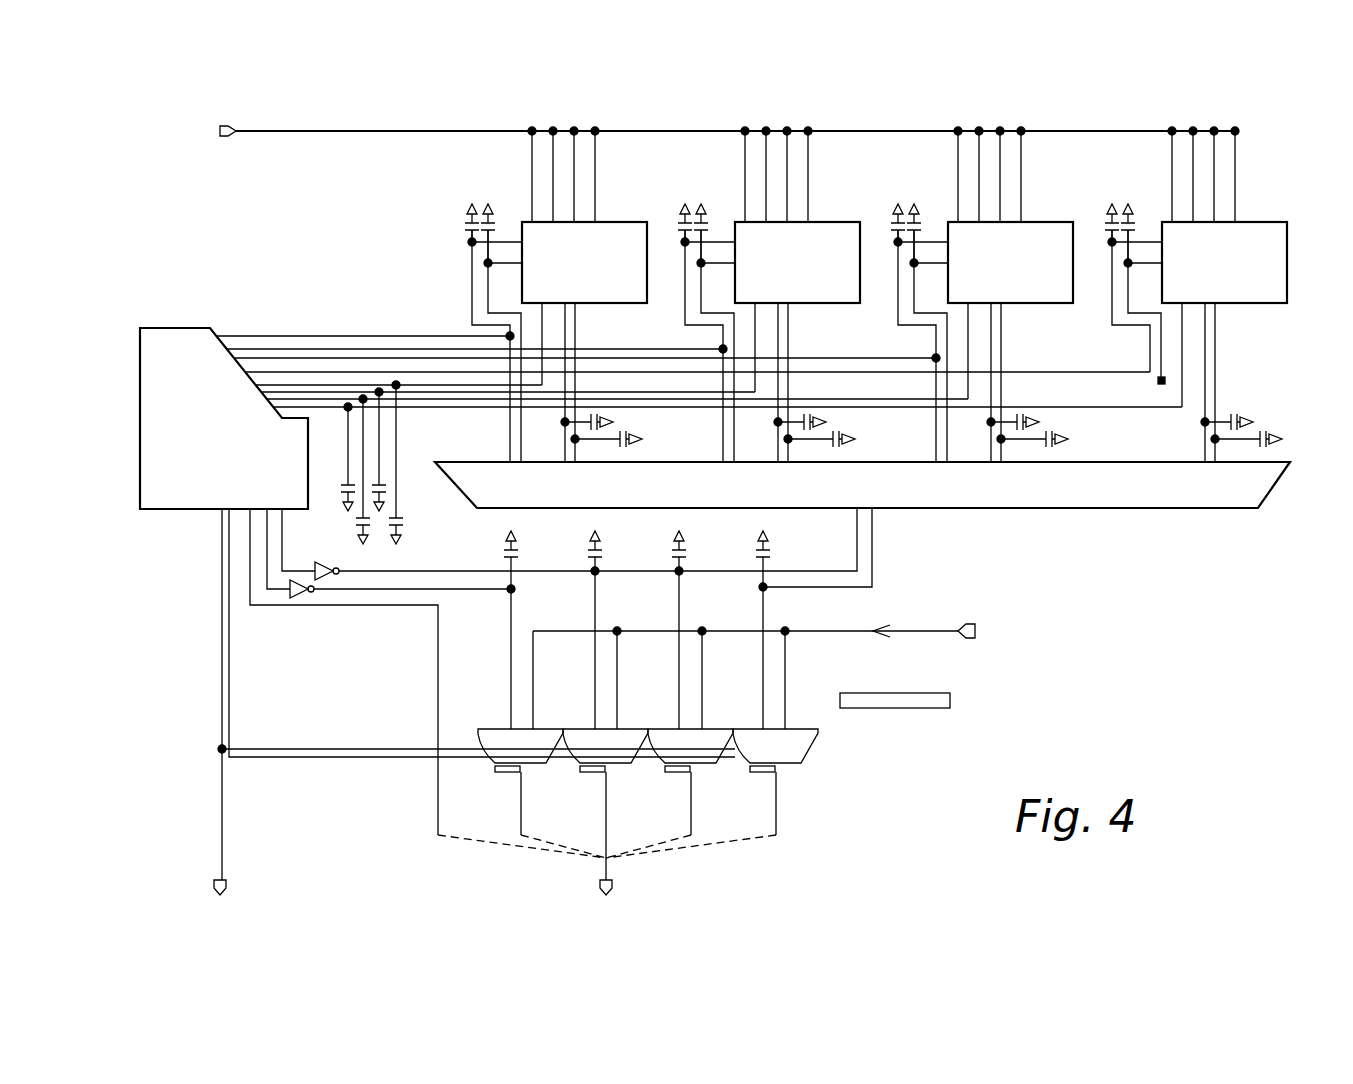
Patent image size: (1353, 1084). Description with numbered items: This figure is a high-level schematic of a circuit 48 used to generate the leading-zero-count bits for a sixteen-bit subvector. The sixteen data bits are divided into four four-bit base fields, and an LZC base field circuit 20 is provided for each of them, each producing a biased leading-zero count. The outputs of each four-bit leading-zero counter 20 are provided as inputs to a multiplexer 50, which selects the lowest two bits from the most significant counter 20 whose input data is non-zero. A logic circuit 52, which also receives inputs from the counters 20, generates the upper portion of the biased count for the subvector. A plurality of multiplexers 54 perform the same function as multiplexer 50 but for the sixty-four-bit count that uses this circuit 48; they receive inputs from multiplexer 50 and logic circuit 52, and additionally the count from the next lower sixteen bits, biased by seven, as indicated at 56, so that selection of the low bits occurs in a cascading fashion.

The LZC base field circuit 20 is at (602, 222).
The circuit 48 is at (1289, 141).
The multiplexer 50 is at (1210, 508).
The logic circuit 52 is at (160, 510).
The multiplexers 54 is at (558, 729).
The next lower 16 bits input 56 is at (918, 631).